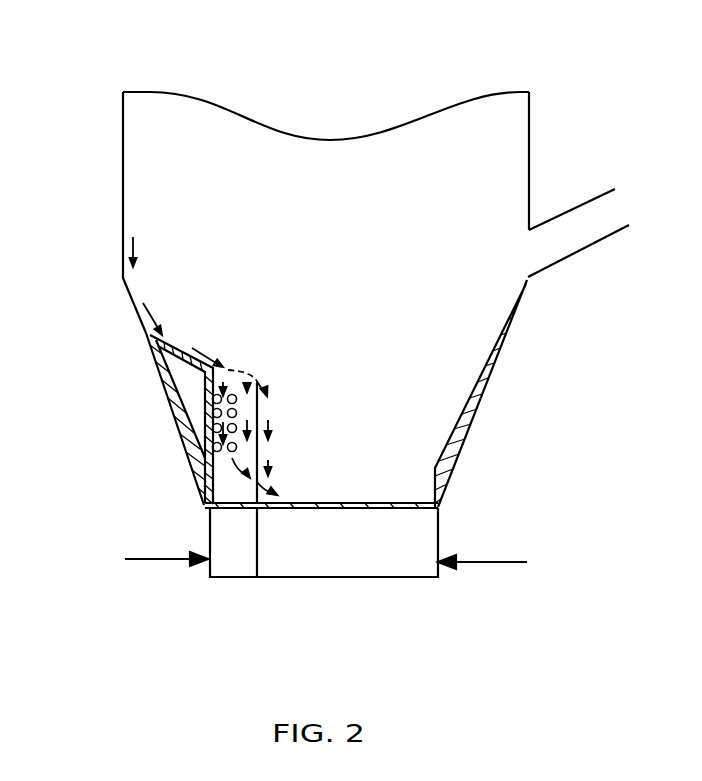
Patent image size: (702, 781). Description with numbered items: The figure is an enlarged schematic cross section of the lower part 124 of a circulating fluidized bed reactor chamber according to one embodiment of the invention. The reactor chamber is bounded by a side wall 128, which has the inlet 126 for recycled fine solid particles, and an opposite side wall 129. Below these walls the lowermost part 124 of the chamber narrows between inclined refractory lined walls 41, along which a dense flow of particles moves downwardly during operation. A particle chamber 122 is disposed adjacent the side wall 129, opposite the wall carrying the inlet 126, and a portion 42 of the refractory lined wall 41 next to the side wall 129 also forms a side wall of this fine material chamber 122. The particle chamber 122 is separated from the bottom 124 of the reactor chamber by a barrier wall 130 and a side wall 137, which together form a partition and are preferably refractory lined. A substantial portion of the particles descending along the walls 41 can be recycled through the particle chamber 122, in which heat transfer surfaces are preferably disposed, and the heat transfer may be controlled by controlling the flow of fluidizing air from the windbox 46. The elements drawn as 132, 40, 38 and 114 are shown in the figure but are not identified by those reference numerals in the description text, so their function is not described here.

The lower part of the reactor chamber 124 is at (352, 117).
The side wall 128 is at (531, 110).
The side wall 129 is at (122, 128).
The inlet 126 is at (533, 251).
The inclined refractory lined walls 41 is at (150, 343).
The portion of the refractory lined wall 42 is at (168, 397).
The barrier wall 130 is at (233, 370).
The particle flow 132 is at (247, 384).
The side wall of chamber 137 is at (259, 402).
The particle chamber 122 is at (284, 417).
The nozzles 40 is at (237, 447).
The lower flow region 38 is at (258, 483).
The windbox 46 is at (247, 559).
The second air chamber 114 is at (345, 559).